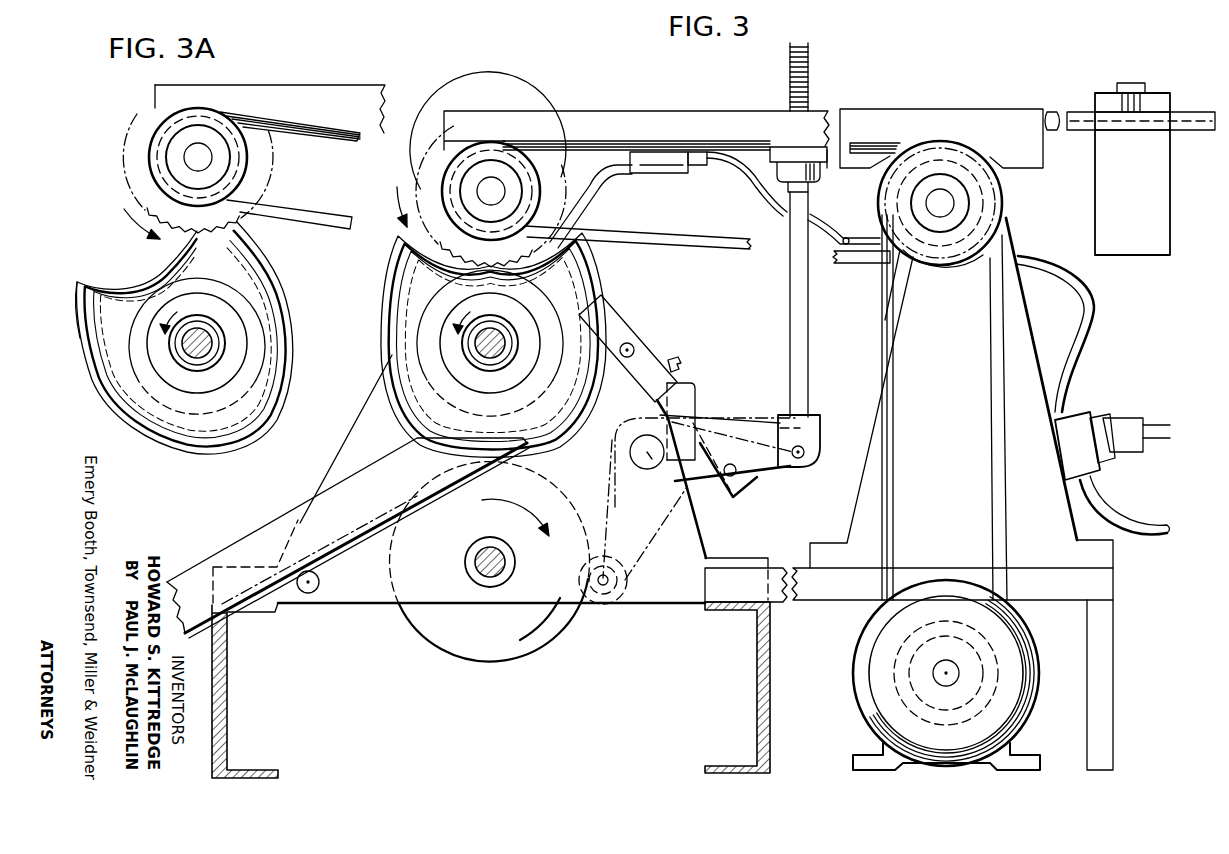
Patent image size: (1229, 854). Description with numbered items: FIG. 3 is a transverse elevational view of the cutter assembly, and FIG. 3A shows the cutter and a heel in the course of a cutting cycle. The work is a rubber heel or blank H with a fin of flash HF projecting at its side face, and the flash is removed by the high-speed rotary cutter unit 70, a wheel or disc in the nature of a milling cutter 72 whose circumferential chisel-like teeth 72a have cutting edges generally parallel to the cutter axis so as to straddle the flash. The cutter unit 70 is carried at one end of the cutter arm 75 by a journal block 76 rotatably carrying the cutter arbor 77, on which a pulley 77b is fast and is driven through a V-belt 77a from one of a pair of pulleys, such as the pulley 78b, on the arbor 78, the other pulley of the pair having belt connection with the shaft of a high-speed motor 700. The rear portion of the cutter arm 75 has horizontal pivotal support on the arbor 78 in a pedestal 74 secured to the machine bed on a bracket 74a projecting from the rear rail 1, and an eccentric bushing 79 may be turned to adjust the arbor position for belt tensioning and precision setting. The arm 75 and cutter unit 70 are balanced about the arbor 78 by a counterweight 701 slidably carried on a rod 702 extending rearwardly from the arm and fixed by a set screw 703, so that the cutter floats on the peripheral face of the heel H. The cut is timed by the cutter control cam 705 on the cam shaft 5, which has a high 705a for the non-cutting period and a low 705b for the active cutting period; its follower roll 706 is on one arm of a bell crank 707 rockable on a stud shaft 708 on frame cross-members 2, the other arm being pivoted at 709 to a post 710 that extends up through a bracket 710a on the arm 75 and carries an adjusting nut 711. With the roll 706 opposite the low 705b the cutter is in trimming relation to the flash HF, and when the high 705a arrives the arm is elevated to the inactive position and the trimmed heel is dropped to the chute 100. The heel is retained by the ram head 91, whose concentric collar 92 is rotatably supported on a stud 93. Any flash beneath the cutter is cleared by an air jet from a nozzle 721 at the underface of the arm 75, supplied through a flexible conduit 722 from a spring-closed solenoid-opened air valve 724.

In FIG. 3, the rear rail 1 is at (224, 705).
In FIG. 3, the frame cross-members 2 is at (357, 424).
In FIG. 3, the cam shaft 5 is at (482, 563).
In FIG. 3A, the cutter unit 70 is at (142, 106).
In FIG. 3A, the milling cutter 72 is at (140, 172).
In FIG. 3, the milling cutter 72 is at (420, 192).
In FIG. 3A, the chisel-like teeth 72a is at (175, 243).
In FIG. 3, the pedestal 74 is at (1040, 380).
In FIG. 3, the bracket 74a is at (840, 604).
In FIG. 3A, the cutter arm 75 is at (277, 92).
In FIG. 3, the cutter arm 75 is at (674, 111).
In FIG. 3A, the journal block 76 is at (156, 120).
In FIG. 3, the journal block 76 is at (442, 155).
In FIG. 3A, the cutter arbor 77 is at (190, 155).
In FIG. 3, the cutter arbor 77 is at (484, 187).
In FIG. 3, the V-belt 77a is at (694, 270).
In FIG. 3, the pulley 77b is at (505, 146).
In FIG. 3, the arbor 78 is at (946, 206).
In FIG. 3, the V-belt pulley 78b is at (937, 270).
In FIG. 3, the eccentric bushing 79 is at (962, 240).
In FIG. 3, the ram head 91 is at (427, 327).
In FIG. 3, the concentric collar 92 is at (443, 343).
In FIG. 3, the stud 93 is at (473, 363).
In FIG. 3, the collecting chute 100 is at (283, 527).
In FIG. 3, the high-speed motor 700 is at (868, 667).
In FIG. 3, the counterweight 701 is at (1146, 210).
In FIG. 3, the rod 702 is at (1187, 112).
In FIG. 3, the set screw 703 is at (1130, 87).
In FIG. 3, the cutter control cam 705 is at (443, 633).
In FIG. 3, the cam high 705a is at (632, 437).
In FIG. 3, the cam low 705b is at (556, 689).
In FIG. 3, the follower roll 706 is at (599, 593).
In FIG. 3, the bell crank 707 is at (777, 463).
In FIG. 3, the stud shaft 708 is at (662, 490).
In FIG. 3, the pivot 709 is at (800, 452).
In FIG. 3, the post 710 is at (800, 312).
In FIG. 3, the bracket 710a is at (864, 211).
In FIG. 3, the adjusting nut 711 is at (780, 176).
In FIG. 3, the nozzle 721 is at (587, 207).
In FIG. 3, the flexible conduit 722 is at (800, 232).
In FIG. 3, the air valve 724 is at (1078, 422).
In FIG. 3A, the heel H is at (240, 262).
In FIG. 3, the heel H is at (562, 288).
In FIG. 3A, the flash HF is at (103, 372).
In FIG. 3, the flash HF is at (583, 263).